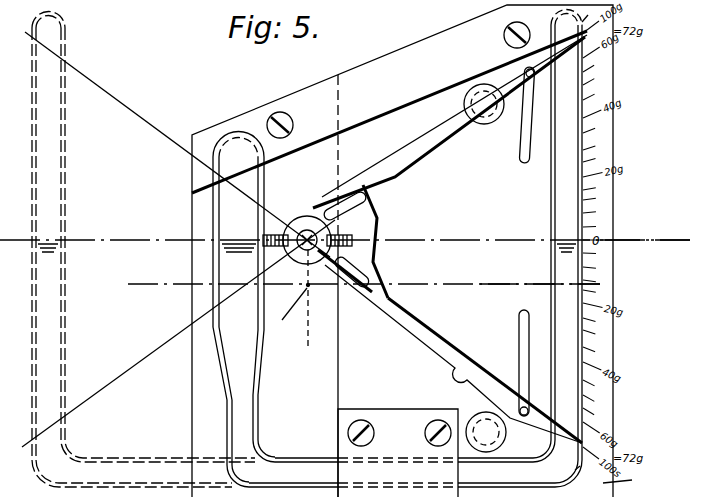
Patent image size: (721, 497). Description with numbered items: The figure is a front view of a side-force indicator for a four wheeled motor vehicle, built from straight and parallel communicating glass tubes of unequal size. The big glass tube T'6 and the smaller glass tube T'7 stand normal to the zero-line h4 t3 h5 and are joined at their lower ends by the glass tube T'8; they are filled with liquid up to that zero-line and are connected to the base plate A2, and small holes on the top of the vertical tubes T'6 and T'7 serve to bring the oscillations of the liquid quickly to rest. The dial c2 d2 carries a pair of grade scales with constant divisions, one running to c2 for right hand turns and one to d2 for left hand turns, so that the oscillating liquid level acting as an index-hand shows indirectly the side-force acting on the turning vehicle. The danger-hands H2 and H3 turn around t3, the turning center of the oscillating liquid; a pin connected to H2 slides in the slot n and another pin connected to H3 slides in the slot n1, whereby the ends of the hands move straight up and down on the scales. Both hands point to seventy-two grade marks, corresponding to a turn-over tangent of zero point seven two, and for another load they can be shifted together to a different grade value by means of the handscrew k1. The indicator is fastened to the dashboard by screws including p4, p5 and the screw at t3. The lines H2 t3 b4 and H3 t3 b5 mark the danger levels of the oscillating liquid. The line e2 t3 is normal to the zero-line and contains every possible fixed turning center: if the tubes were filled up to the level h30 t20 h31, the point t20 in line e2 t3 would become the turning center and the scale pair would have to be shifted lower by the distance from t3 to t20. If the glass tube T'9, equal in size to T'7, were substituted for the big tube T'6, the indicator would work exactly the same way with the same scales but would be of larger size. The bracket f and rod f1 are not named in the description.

The glass tube T'9 is at (143, 250).
The glass tube T'6 is at (250, 310).
The glass tube T'8 is at (415, 256).
The glass tube T'7 is at (604, 130).
The zero-line point h4 is at (10, 240).
The zero-line point h5 is at (645, 238).
The alternative liquid level point h30 is at (364, 278).
The alternative liquid level point h31 is at (510, 285).
The danger level point b4 is at (100, 96).
The danger level point b5 is at (100, 410).
The rod f1 is at (400, 97).
The bracket f is at (383, 416).
The handscrew k1 is at (290, 275).
The danger-hand H3 is at (442, 133).
The danger-hand H2 is at (445, 357).
The screw p5 is at (500, 118).
The screw p4 is at (504, 440).
The slot n1 is at (520, 150).
The slot n is at (526, 328).
The line point e2 is at (320, 300).
The turning center t3 is at (300, 282).
The alternative turning center t20 is at (290, 310).
The dial scale end d2 is at (592, 13).
The dial scale end c2 is at (584, 473).
The base plate A2 is at (625, 482).